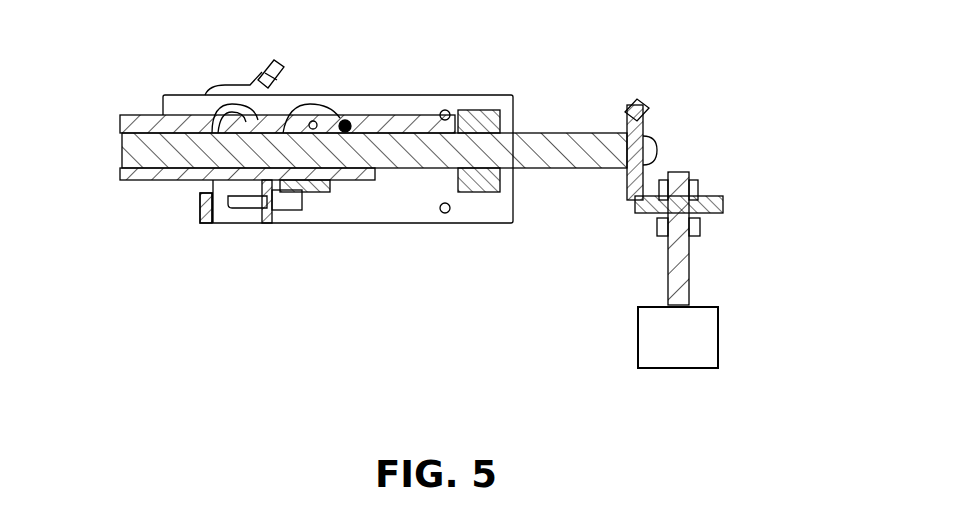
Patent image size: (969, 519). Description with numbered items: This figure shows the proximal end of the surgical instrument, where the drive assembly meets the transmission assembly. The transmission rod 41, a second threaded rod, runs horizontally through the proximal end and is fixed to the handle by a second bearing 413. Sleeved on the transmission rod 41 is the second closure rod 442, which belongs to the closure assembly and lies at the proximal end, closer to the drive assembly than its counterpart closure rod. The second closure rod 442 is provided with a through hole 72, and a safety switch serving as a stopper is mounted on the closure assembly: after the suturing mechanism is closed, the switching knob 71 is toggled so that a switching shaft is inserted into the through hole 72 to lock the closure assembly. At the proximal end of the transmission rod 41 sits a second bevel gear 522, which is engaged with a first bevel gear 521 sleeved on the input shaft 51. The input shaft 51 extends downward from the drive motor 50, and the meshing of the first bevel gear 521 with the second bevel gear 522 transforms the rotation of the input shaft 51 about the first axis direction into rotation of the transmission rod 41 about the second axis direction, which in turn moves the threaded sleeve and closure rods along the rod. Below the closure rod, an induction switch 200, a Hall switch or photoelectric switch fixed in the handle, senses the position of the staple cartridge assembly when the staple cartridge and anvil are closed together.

The transmission rod 41 is at (148, 153).
The second closure rod 442 is at (138, 117).
The switching knob 71 is at (243, 82).
The through hole 72 is at (318, 120).
The second bearing 413 is at (482, 122).
The second bevel gear 522 is at (628, 105).
The first bevel gear 521 is at (635, 207).
The input shaft 51 is at (668, 265).
The drive motor 50 is at (695, 338).
The induction switch 200 is at (290, 210).